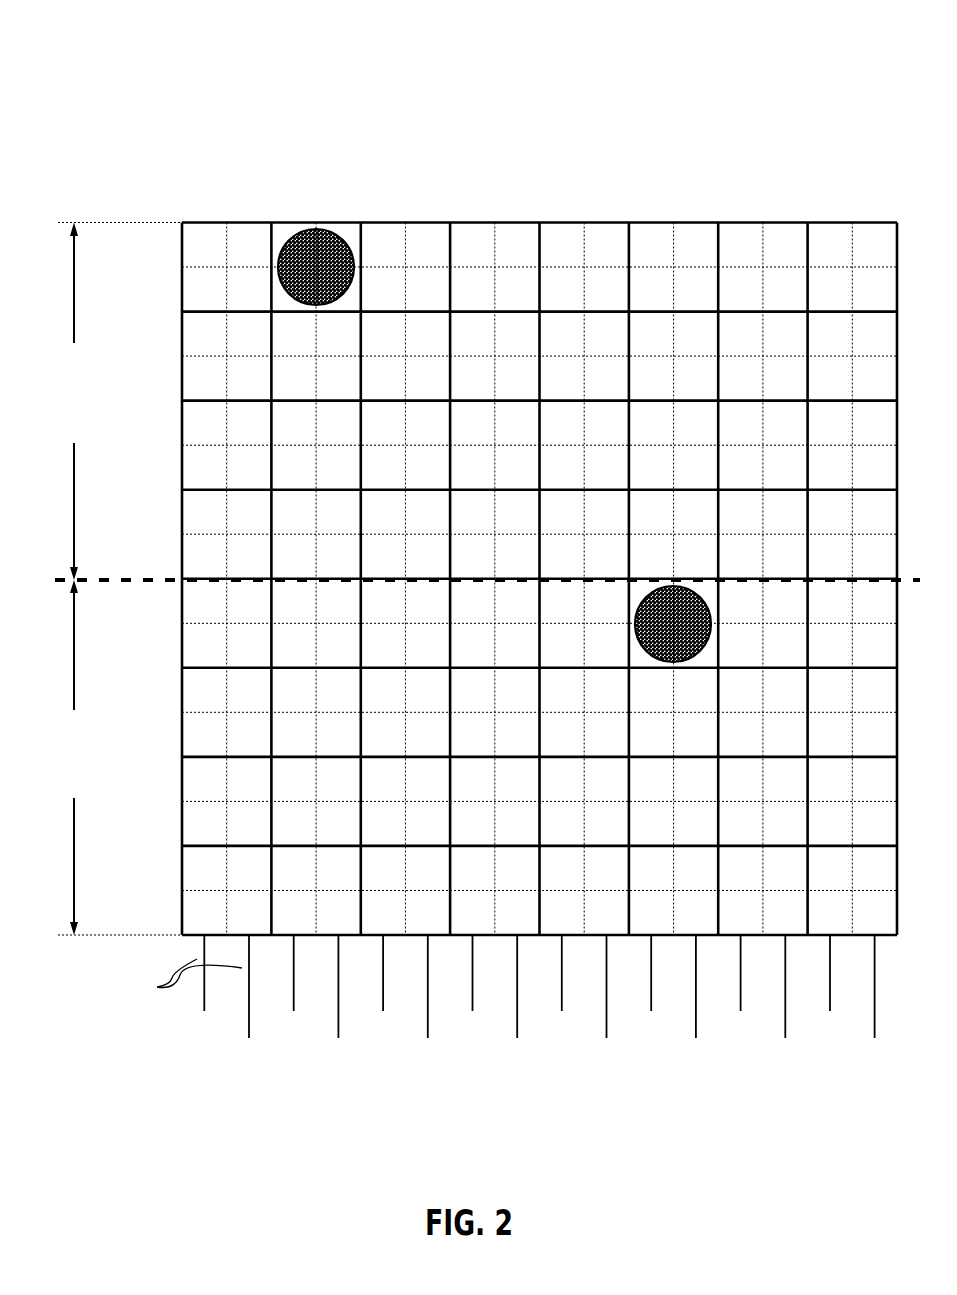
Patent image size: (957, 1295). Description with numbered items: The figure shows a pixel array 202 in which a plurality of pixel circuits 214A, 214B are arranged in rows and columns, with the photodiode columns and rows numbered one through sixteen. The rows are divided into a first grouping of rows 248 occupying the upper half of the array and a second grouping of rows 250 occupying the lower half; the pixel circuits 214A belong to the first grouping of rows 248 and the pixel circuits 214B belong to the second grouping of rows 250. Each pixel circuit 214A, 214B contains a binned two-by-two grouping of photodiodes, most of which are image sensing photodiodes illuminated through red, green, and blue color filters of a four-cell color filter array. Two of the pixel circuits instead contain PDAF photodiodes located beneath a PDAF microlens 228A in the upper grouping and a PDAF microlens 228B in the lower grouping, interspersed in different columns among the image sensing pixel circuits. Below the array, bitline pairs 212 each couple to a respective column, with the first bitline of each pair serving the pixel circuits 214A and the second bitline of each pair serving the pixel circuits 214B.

The pixel array 202 is at (838, 38).
The pixel circuits 214A is at (182, 333).
The pixel circuits 214B is at (182, 648).
The PDAF microlens 228A is at (345, 292).
The PDAF microlens 228B is at (695, 594).
The first grouping of rows 248 is at (56, 438).
The second grouping of rows 250 is at (56, 796).
The bitline pairs 212 is at (117, 1037).